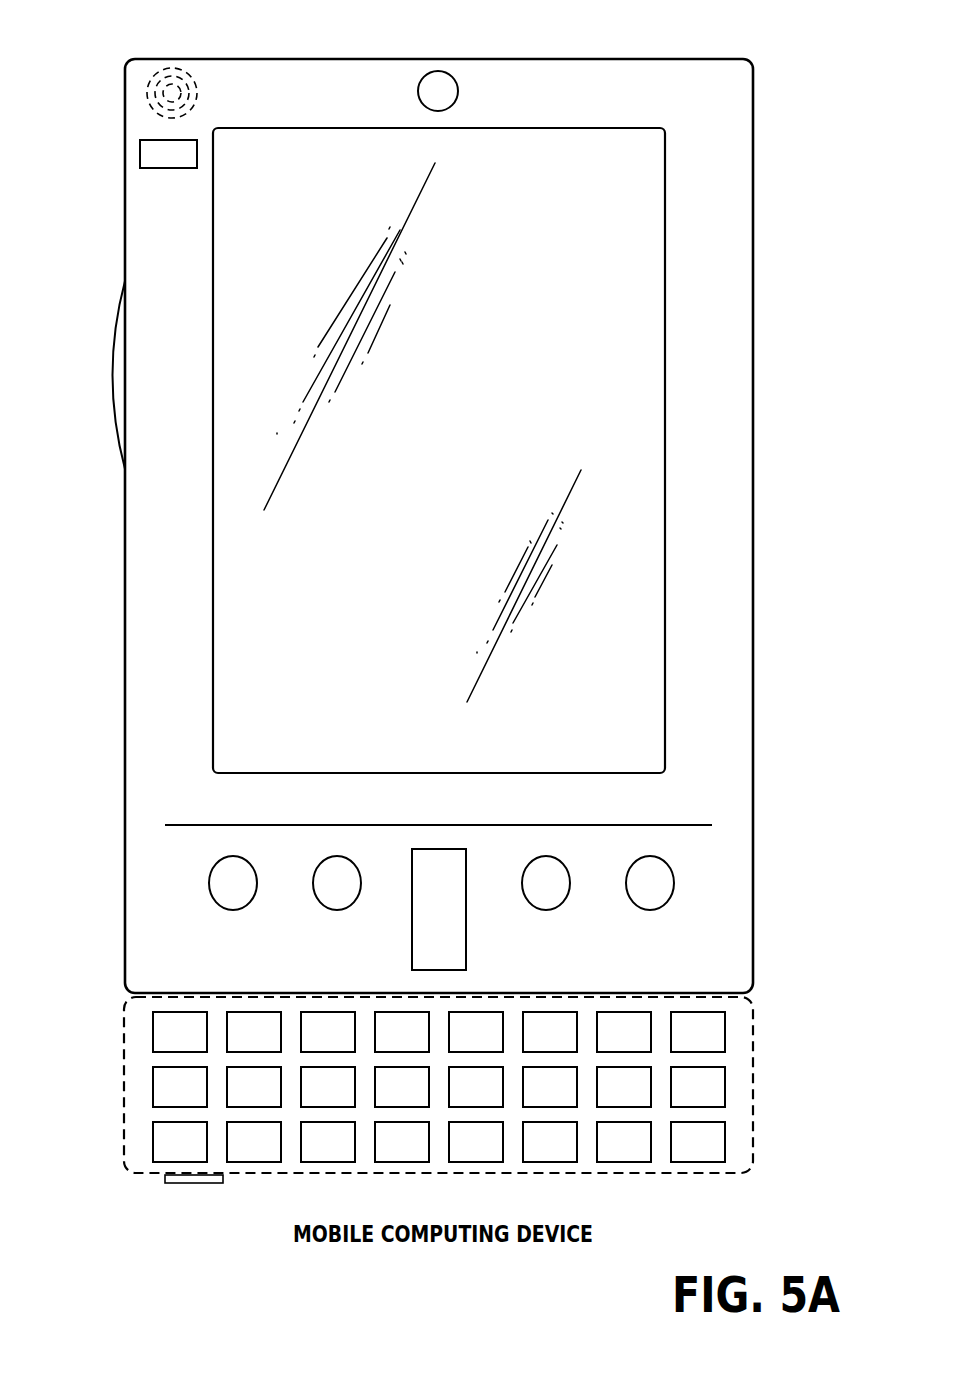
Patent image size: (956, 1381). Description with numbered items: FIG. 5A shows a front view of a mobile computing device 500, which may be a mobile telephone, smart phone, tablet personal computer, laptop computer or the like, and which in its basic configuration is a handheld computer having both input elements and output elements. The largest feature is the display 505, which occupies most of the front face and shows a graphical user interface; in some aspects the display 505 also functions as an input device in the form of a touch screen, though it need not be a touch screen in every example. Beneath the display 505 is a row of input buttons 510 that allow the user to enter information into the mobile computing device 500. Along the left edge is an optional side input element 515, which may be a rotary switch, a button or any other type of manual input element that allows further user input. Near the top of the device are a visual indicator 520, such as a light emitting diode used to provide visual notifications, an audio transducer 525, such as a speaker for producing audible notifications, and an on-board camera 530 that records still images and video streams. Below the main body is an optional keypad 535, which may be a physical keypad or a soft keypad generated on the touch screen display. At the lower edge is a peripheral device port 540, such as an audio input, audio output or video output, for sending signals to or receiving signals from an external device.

The mobile computing device 500 is at (718, 58).
The display 505 is at (237, 620).
The input buttons 510 is at (233, 910).
The side input element 515 is at (106, 378).
The visual indicator 520 is at (140, 152).
The audio transducer 525 is at (145, 94).
The on-board camera 530 is at (440, 71).
The keypad 535 is at (135, 1086).
The peripheral device port 540 is at (172, 1184).